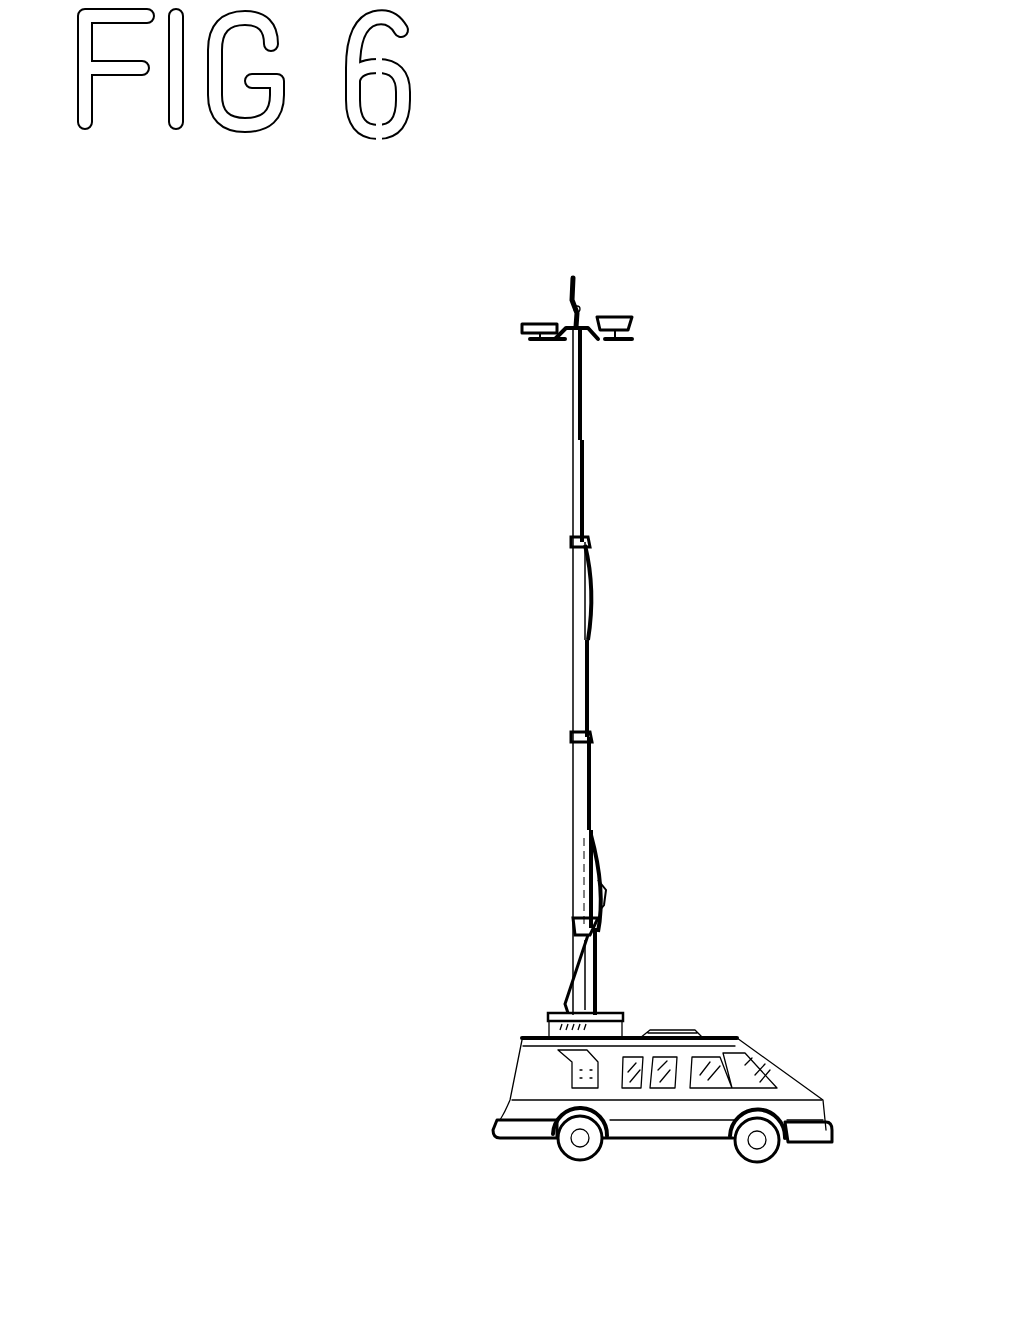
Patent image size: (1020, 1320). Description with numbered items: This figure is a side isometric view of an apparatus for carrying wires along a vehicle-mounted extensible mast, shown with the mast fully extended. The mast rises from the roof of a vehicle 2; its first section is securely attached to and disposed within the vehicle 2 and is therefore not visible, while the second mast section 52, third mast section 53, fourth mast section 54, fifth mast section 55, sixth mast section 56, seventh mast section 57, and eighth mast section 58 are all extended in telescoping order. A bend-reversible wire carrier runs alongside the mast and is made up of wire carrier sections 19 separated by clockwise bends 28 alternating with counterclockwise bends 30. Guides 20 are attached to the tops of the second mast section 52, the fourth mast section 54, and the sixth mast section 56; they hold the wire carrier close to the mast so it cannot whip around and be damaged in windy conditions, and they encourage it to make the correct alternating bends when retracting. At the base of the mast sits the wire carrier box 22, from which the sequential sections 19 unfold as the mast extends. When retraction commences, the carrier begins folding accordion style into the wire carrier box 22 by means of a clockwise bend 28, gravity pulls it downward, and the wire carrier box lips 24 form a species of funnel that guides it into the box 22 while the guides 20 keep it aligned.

The vehicle 2 is at (797, 1097).
The bend-reversible wire carrier sections 19 is at (603, 898).
The guides 20 is at (573, 547).
The wire carrier box 22 is at (530, 1030).
The wire carrier box lips 24 is at (622, 1015).
The clockwise bends 28 is at (560, 1005).
The counterclockwise bends 30 is at (603, 906).
The second mast section 52 is at (598, 988).
The third mast section 53 is at (598, 876).
The fourth mast section 54 is at (592, 777).
The fifth mast section 55 is at (588, 692).
The sixth mast section 56 is at (592, 590).
The seventh mast section 57 is at (584, 474).
The eighth mast section 58 is at (583, 400).